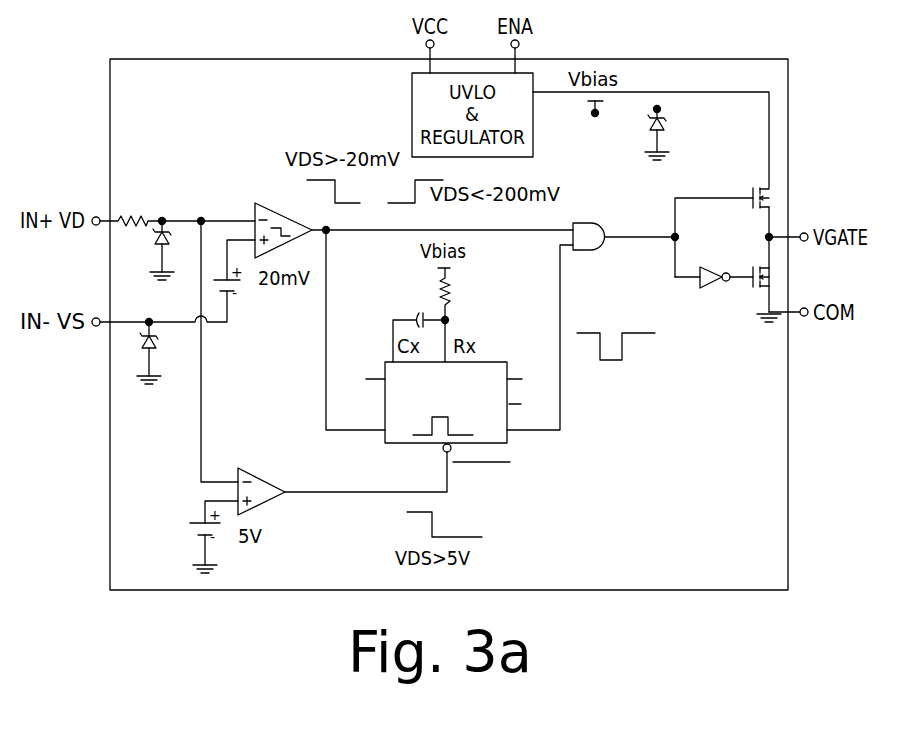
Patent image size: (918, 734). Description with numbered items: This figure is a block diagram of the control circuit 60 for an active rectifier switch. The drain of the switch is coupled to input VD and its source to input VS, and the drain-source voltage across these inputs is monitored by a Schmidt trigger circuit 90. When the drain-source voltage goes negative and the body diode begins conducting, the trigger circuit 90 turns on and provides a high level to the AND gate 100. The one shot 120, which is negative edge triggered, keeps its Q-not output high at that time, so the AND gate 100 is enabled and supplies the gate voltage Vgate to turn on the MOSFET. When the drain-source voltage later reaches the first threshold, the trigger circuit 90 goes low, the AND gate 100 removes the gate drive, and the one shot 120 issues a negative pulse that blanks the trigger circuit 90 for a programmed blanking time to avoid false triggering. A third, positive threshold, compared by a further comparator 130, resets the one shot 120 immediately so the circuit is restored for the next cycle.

The control circuit 60 is at (800, 110).
The Schmidt trigger circuit 90 is at (281, 215).
The AND gate 100 is at (591, 250).
The one shot 120 is at (487, 366).
The second comparator (5V threshold) 130 is at (265, 502).